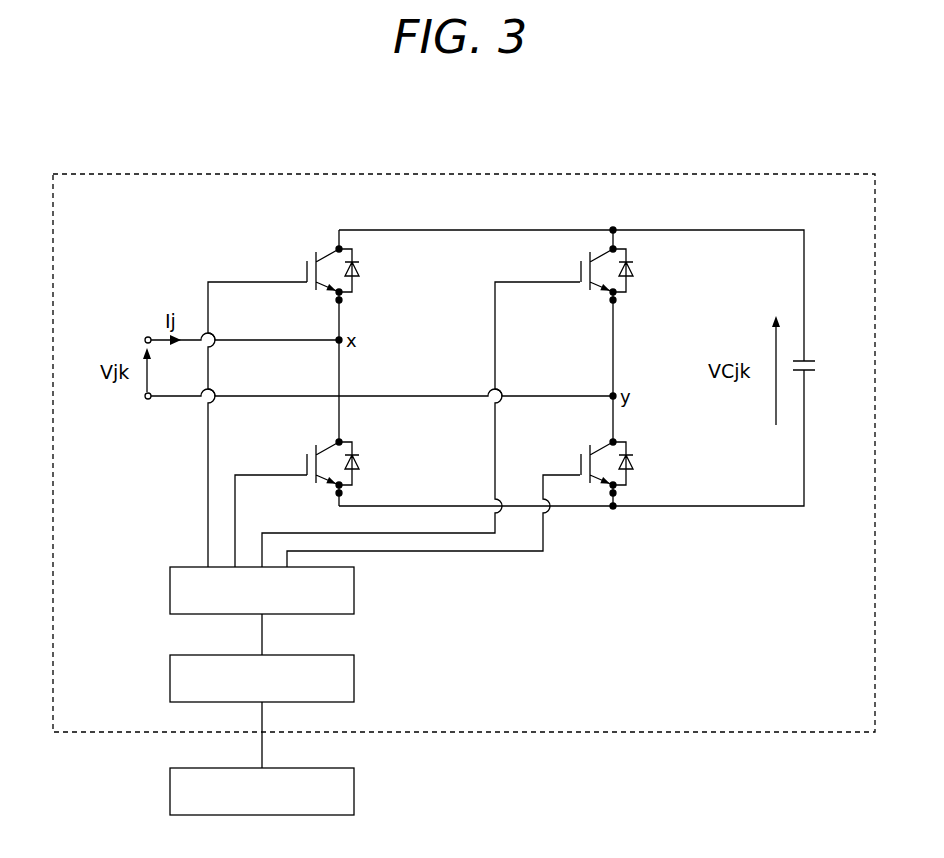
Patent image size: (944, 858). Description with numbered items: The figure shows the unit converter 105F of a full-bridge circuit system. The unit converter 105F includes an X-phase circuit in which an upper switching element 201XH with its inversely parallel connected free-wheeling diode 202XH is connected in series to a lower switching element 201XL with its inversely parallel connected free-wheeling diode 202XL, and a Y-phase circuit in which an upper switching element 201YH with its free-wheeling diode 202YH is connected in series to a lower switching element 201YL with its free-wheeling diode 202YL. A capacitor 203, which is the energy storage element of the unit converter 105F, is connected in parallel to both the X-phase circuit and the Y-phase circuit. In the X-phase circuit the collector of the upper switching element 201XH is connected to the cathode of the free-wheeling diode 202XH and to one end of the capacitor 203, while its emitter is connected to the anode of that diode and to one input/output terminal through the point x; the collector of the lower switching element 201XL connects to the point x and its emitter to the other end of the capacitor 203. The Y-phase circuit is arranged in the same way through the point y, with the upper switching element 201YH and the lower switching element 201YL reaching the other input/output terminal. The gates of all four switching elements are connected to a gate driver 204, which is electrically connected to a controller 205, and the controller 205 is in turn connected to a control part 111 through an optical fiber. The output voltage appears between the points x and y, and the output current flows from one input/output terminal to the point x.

The unit converter 105F is at (175, 172).
The upper switching element 201XH is at (303, 270).
The free-wheeling diode 202XH is at (360, 271).
The upper switching element 201YH is at (573, 270).
The free-wheeling diode 202YH is at (636, 271).
The lower switching element 201XL is at (303, 463).
The free-wheeling diode 202XL is at (397, 452).
The lower switching element 201YL is at (577, 463).
The free-wheeling diode 202YL is at (670, 452).
The capacitor 203 is at (801, 376).
The gate driver 204 is at (356, 588).
The controller 205 is at (356, 676).
The control part 111 is at (356, 789).